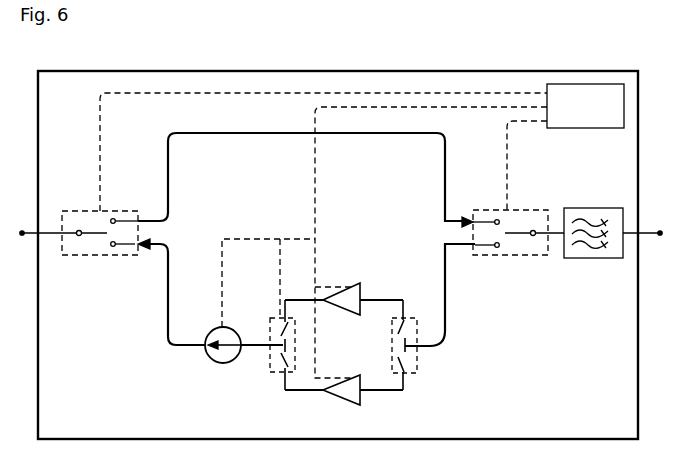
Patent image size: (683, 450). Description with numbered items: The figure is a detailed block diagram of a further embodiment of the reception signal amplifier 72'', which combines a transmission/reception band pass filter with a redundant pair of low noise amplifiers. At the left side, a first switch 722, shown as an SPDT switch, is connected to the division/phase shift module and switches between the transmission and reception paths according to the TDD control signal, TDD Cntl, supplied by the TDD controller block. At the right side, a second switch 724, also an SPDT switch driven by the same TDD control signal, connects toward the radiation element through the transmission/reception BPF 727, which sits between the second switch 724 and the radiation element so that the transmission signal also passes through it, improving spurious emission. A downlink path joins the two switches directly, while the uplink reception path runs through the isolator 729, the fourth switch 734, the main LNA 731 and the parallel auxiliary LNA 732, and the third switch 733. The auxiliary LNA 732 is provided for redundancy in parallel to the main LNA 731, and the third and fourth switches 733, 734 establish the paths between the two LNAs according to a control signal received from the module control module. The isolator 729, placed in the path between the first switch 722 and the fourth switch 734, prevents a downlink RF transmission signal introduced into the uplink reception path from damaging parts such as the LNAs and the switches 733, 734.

The reception signal amplifier 72'' is at (341, 238).
The first switch 722 is at (122, 211).
The second switch 724 is at (528, 210).
The transmission/reception BPF 727 is at (593, 208).
The isolator 729 is at (223, 364).
The main LNA 731 is at (361, 283).
The auxiliary LNA 732 is at (361, 375).
The third switch 733 is at (418, 366).
The fourth switch 734 is at (272, 375).